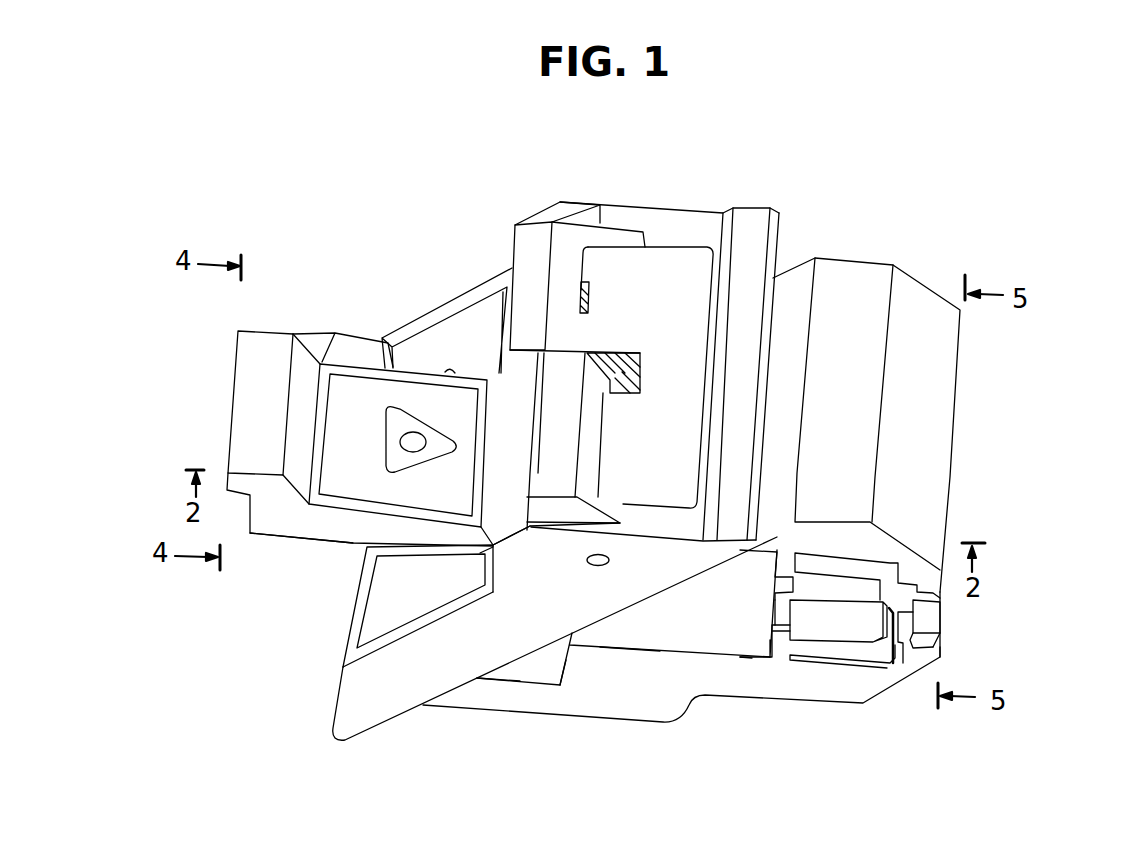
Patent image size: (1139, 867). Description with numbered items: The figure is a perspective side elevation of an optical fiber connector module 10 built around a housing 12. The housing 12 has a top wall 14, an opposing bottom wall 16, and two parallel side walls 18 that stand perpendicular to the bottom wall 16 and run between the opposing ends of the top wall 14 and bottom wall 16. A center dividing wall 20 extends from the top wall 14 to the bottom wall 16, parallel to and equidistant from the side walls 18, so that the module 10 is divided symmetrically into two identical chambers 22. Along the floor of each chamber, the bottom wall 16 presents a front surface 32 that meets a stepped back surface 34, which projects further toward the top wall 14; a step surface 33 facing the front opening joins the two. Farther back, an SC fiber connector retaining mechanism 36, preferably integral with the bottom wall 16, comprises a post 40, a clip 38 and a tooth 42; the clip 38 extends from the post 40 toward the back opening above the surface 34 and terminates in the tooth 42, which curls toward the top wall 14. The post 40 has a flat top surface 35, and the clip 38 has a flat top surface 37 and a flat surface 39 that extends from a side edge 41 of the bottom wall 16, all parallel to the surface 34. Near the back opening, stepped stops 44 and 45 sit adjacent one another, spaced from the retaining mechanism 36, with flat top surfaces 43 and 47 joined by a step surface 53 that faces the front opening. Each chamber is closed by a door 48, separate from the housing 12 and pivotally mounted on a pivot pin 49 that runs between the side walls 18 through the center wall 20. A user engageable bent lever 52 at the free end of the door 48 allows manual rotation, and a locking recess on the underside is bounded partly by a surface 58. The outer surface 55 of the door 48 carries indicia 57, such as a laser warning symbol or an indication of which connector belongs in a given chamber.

The optical fiber connector module 10 is at (1044, 219).
The housing 12 is at (829, 207).
The top wall 14 is at (666, 273).
The bottom wall 16 is at (668, 699).
The side walls 18 is at (450, 298).
The center dividing wall 20 is at (473, 560).
The chambers 22 is at (407, 601).
The front surface 32 is at (503, 681).
The step surface 33 is at (563, 673).
The stepped back surface 34 is at (630, 653).
The flat top surface 35 is at (773, 627).
The SC fiber connector retaining mechanism 36 is at (834, 619).
The flat top surface 37 is at (781, 576).
The clip 38 is at (797, 661).
The flat surface 39 is at (848, 642).
The post 40 is at (777, 660).
The side edge 41 is at (752, 660).
The tooth 42 is at (889, 640).
The top surface 43 is at (903, 665).
The stop 44 is at (913, 657).
The stop 45 is at (930, 653).
The top surface 47 is at (941, 628).
The door 48 is at (303, 513).
The pivot pin 49 is at (596, 567).
The bent lever 52 is at (245, 427).
The step surface 53 is at (913, 630).
The outer surface 55 is at (357, 505).
The indicia 57 is at (404, 436).
The surface 58 is at (568, 440).